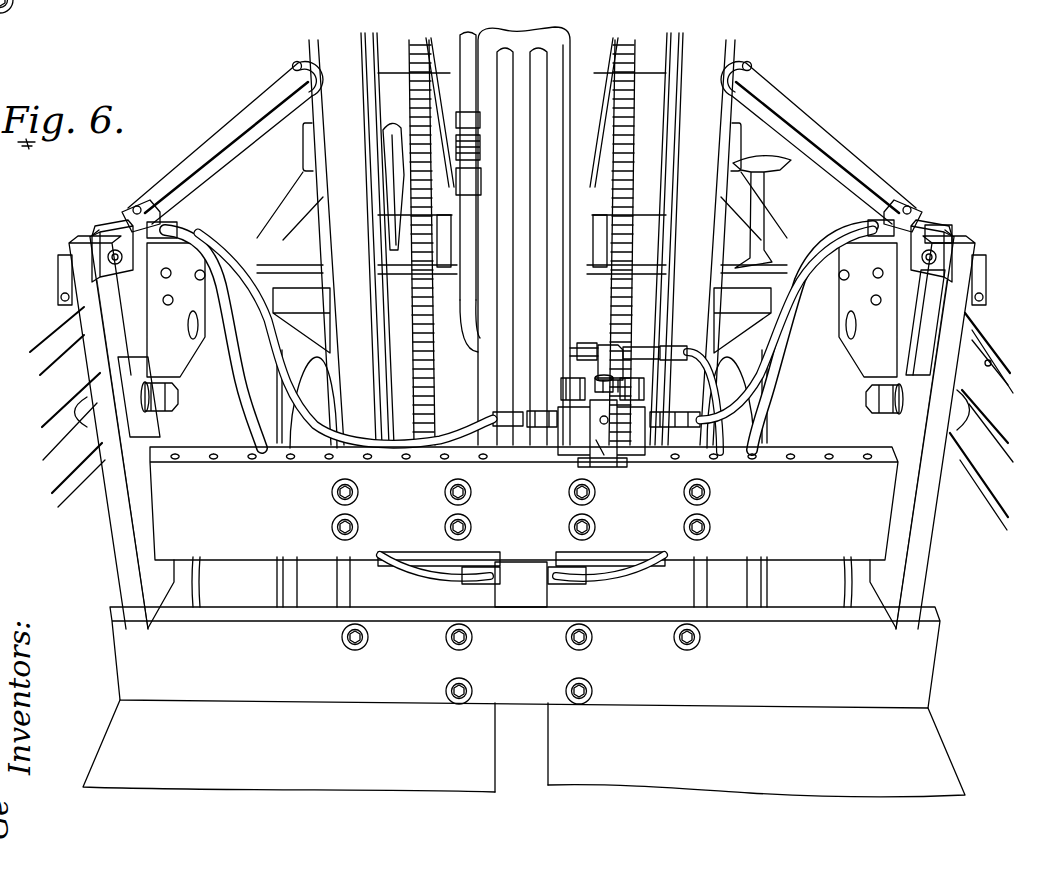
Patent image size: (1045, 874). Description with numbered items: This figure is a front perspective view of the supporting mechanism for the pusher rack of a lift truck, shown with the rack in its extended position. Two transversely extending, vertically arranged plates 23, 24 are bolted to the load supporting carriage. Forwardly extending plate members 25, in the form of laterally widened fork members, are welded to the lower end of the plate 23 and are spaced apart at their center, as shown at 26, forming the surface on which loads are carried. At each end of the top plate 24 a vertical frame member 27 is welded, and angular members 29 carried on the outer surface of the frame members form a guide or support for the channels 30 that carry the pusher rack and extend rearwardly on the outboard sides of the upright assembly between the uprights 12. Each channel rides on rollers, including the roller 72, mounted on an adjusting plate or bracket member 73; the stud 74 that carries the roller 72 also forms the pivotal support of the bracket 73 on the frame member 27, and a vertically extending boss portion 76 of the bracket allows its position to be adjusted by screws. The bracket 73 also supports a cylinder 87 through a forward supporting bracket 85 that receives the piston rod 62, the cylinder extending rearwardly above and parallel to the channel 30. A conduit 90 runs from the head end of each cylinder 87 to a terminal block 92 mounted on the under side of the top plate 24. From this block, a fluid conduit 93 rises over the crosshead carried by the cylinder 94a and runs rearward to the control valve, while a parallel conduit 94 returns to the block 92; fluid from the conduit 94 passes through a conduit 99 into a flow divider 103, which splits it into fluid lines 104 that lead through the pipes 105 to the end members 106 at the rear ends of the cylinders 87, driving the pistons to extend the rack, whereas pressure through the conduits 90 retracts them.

The uprights 12 is at (333, 152).
The transversely extending vertically arranged plate 23 is at (130, 656).
The transversely extending vertically arranged plate 24 is at (248, 552).
The forwardly extending plate members 25 is at (577, 765).
The center spacing 26 is at (514, 716).
The frame members 27 is at (118, 520).
The angular members 29 is at (1000, 395).
The channels 30 is at (57, 392).
The piston rods 62 is at (1008, 345).
The roller 72 is at (80, 420).
The adjusting plate or bracket member 73 is at (170, 395).
The stud 74 is at (880, 432).
The vertically extending boss portion 76 is at (940, 228).
The forward supporting bracket 85 is at (62, 268).
The cylinder 87 is at (237, 147).
The conduit 90 is at (254, 426).
The terminal block 92 is at (521, 600).
The fluid conduit 93 is at (500, 172).
The parallel conduit 94 is at (540, 102).
The cylinder 94a is at (555, 212).
The conduit 99 is at (622, 570).
The flow divider 103 is at (602, 452).
The fluid lines 104 is at (228, 248).
The pipes 105 is at (252, 103).
The end members 106 is at (300, 64).